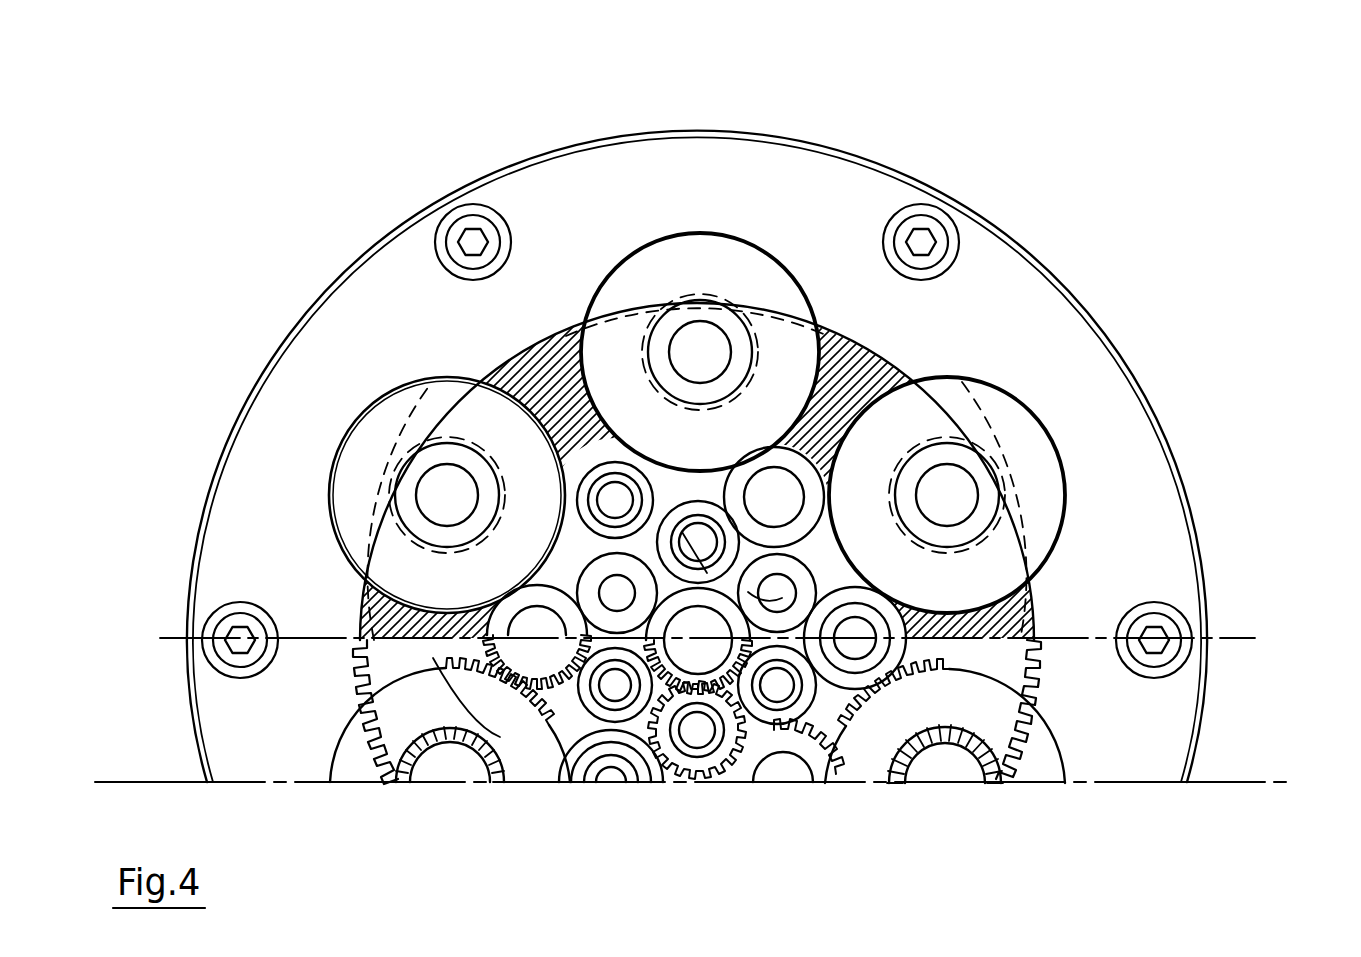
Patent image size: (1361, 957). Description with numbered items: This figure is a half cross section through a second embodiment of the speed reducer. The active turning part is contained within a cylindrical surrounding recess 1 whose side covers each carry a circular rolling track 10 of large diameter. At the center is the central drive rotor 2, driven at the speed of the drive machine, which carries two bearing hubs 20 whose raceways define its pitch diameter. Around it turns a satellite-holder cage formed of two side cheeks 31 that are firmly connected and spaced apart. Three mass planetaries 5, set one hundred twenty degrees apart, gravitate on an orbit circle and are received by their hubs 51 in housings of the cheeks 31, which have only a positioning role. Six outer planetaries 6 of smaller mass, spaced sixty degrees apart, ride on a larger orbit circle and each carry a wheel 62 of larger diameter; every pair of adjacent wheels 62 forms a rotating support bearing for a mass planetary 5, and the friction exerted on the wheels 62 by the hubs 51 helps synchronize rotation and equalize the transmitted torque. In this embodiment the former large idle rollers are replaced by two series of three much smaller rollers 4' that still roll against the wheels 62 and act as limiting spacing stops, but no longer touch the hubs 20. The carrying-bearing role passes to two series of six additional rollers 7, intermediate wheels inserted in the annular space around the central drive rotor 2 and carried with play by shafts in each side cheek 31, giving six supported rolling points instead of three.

The cylindrical surrounding recess 1 is at (692, 122).
The central drive rotor 2 is at (697, 655).
The rollers 4' is at (691, 461).
The mass planetaries 5 is at (530, 628).
The outer planetaries 6 is at (337, 408).
The additional rollers 7 is at (550, 718).
The circular rolling tracks 10 is at (1040, 598).
The bearing hubs 20 is at (752, 745).
The side cheeks 31 is at (847, 347).
The hubs of the mass planetaries 51 is at (622, 583).
The wheels 62 is at (419, 402).